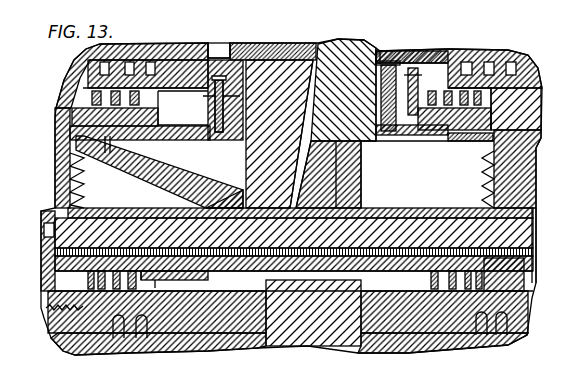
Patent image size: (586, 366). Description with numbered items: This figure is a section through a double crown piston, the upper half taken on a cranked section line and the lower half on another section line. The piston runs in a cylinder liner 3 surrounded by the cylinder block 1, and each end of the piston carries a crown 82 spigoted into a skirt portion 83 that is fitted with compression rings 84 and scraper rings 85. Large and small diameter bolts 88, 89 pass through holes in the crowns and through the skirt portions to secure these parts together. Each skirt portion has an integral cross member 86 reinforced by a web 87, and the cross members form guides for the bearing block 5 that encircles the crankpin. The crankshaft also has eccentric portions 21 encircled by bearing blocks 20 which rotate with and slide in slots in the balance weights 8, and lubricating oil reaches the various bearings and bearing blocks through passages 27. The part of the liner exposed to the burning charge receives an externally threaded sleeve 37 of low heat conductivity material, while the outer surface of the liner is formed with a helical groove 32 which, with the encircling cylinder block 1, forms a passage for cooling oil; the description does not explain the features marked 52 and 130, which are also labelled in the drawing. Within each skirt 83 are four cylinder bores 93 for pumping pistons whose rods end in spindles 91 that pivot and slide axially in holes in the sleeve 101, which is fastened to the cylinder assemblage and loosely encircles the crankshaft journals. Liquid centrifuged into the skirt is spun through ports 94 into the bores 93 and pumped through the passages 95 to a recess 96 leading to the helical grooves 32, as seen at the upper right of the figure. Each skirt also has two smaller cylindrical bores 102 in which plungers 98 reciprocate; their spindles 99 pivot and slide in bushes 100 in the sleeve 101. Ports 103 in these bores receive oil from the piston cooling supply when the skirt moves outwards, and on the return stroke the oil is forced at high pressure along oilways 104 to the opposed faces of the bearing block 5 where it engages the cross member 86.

The cylinder block 1 is at (146, 36).
The cylinder liner 3 is at (528, 70).
The bearing block 5 is at (293, 166).
The balance weights 8 is at (246, 36).
The bearing blocks 20 is at (288, 36).
The eccentric portions 21 is at (336, 34).
The passages 27 is at (348, 150).
The helical groove 32 is at (503, 52).
The sleeve 37 is at (40, 322).
The slots 52 is at (116, 328).
The crown 82 is at (60, 142).
The skirt portion 83 is at (527, 47).
The compression rings 84 is at (476, 86).
The scraper rings 85 is at (448, 82).
The cross member 86 is at (360, 182).
The web 87 is at (180, 176).
The large diameter bolts 88 is at (436, 216).
The small diameter bolts 89 is at (150, 256).
The spindles 91 is at (369, 40).
The cylinder bores 93 is at (462, 134).
The ports 94 is at (436, 128).
The passages 95 is at (394, 126).
The recess 96 is at (426, 66).
The plungers 98 is at (140, 107).
The spindles 99 is at (210, 97).
The bushes 100 is at (232, 101).
The sleeve 101 is at (178, 36).
The cylindrical bores 102 is at (62, 120).
The ports 103 is at (100, 150).
The oilways 104 is at (135, 160).
The wall line 130 is at (530, 183).